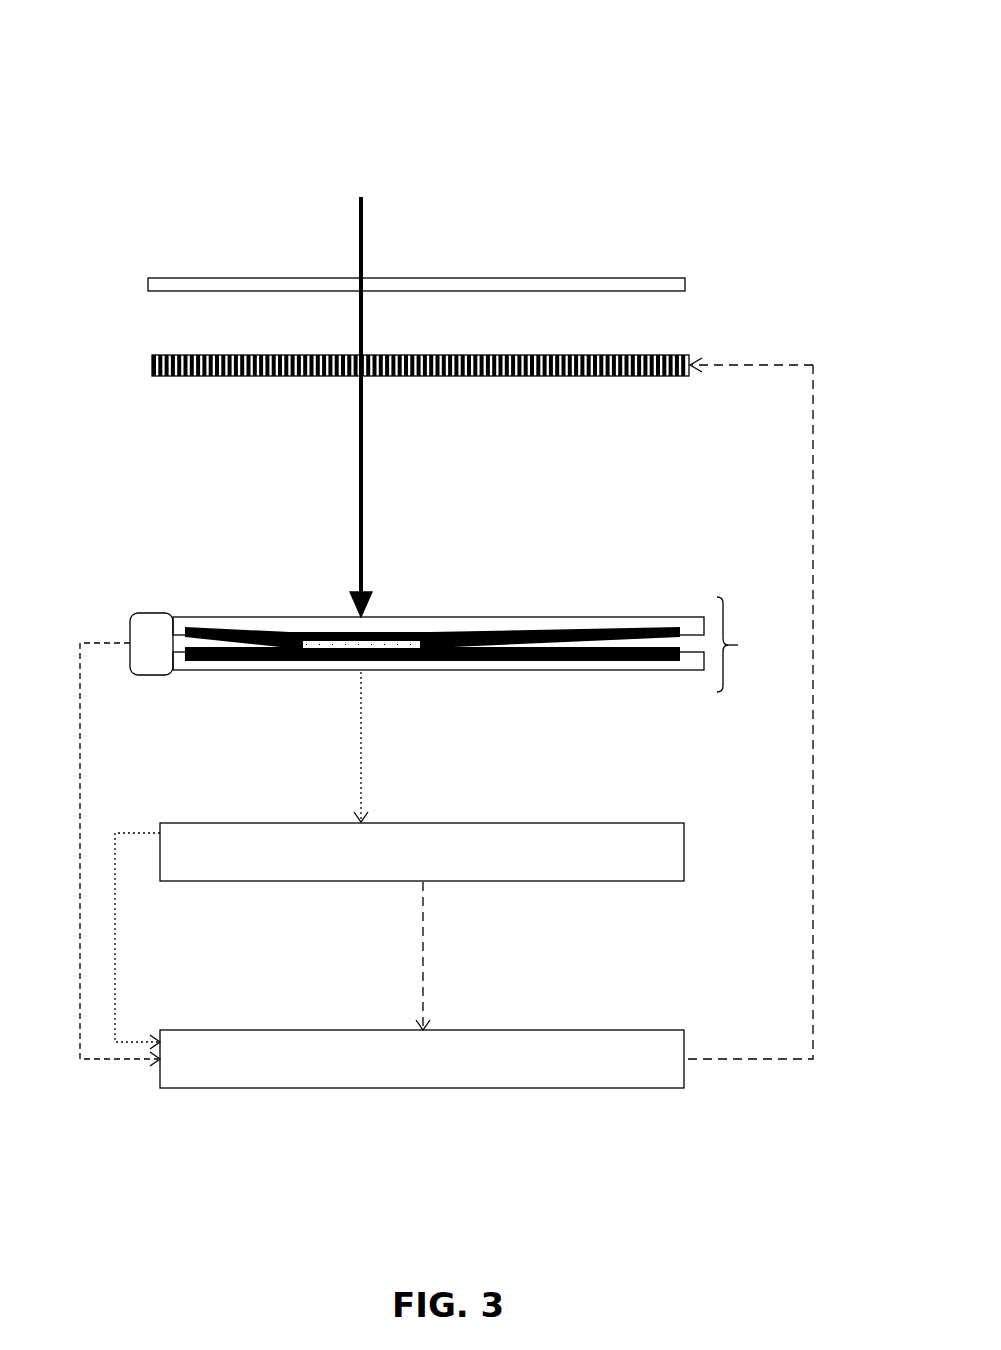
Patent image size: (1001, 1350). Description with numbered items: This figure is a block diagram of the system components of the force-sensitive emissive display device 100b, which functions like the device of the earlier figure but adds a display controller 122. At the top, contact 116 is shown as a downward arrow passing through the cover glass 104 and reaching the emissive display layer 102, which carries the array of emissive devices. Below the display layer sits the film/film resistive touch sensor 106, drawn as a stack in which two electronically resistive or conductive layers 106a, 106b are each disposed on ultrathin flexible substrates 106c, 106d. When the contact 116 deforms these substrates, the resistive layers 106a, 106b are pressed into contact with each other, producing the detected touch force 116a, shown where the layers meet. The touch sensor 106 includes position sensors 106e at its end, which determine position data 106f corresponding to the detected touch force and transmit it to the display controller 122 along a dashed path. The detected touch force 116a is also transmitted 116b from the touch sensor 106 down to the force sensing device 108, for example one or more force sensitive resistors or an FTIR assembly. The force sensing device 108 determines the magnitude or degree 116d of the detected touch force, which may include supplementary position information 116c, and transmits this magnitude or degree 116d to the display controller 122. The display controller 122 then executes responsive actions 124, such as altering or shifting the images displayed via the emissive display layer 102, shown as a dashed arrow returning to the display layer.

The force-sensitive emissive display device 100b is at (97, 52).
The contact 116 is at (364, 226).
The cover glass 104 is at (660, 278).
The emissive display layer 102 is at (510, 355).
The responsive actions 124 is at (754, 365).
The film/film resistive touch sensor 106 is at (746, 644).
The electronically resistive layer 106a is at (622, 632).
The electronically resistive layer 106b is at (622, 660).
The ultrathin flexible substrate 106c is at (227, 616).
The ultrathin flexible substrate 106d is at (205, 672).
The position sensors 106e is at (152, 612).
The position data 106f is at (82, 752).
The detected touch force 116a is at (385, 645).
The transmission of detected touch force 116b is at (360, 746).
The supplementary position information 116c is at (118, 962).
The magnitude or degree of detected touch force 116d is at (422, 964).
The force sensing device 108 is at (422, 852).
The display controller 122 is at (422, 1059).